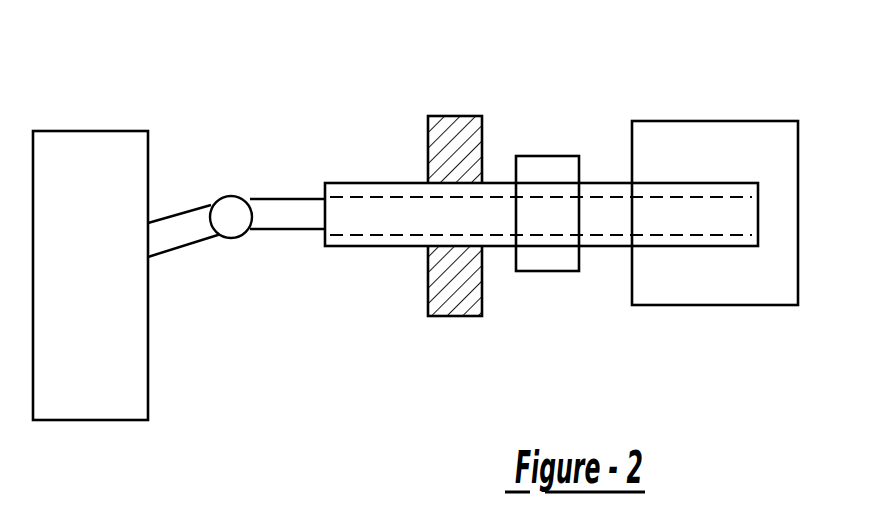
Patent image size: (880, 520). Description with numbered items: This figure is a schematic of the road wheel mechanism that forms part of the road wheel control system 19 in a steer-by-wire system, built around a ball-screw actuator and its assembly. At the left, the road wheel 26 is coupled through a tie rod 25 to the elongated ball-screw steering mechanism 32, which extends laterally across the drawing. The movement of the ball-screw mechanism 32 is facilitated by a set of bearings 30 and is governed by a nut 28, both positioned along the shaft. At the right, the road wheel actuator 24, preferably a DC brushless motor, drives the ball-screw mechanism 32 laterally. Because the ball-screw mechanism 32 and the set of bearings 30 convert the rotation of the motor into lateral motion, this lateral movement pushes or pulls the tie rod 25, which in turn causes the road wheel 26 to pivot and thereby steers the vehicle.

The road wheel control system 19 is at (150, 58).
The road wheel actuator 24 is at (770, 305).
The tie rod 25 is at (227, 197).
The road wheel 26 is at (148, 364).
The nut 28 is at (555, 156).
The set of bearings 30 is at (428, 150).
The ball-screw steering mechanism 32 is at (342, 247).